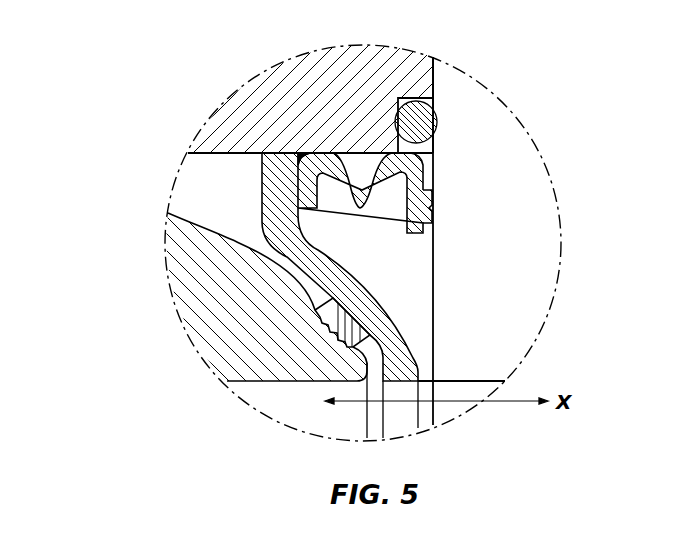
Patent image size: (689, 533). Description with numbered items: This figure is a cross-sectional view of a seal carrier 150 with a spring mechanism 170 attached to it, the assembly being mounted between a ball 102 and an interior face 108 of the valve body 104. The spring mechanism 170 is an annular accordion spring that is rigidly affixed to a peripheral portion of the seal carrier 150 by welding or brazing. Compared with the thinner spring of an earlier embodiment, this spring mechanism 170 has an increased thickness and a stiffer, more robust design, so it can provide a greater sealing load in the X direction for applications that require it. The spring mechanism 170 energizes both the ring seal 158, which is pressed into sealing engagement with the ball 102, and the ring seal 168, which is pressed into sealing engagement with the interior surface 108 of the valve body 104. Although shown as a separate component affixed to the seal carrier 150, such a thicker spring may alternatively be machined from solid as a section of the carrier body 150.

The ball 102 is at (190, 303).
The valve body 104 is at (270, 87).
The interior face of the valve body 108 is at (435, 277).
The seal carrier 150 is at (247, 216).
The ring seal 158 is at (330, 327).
The ring seal 168 is at (435, 208).
The spring mechanism 170 is at (358, 160).